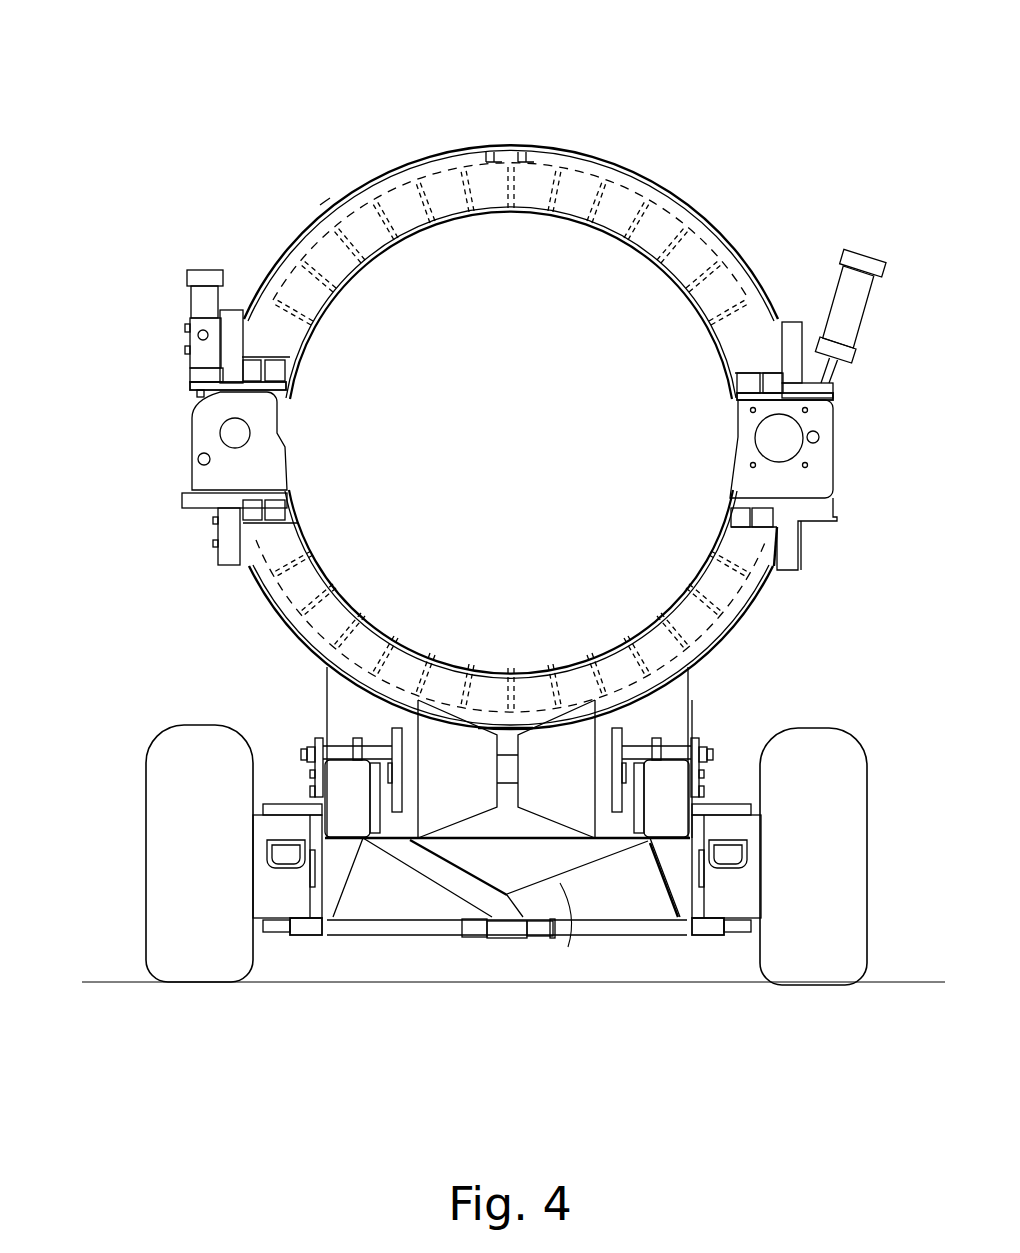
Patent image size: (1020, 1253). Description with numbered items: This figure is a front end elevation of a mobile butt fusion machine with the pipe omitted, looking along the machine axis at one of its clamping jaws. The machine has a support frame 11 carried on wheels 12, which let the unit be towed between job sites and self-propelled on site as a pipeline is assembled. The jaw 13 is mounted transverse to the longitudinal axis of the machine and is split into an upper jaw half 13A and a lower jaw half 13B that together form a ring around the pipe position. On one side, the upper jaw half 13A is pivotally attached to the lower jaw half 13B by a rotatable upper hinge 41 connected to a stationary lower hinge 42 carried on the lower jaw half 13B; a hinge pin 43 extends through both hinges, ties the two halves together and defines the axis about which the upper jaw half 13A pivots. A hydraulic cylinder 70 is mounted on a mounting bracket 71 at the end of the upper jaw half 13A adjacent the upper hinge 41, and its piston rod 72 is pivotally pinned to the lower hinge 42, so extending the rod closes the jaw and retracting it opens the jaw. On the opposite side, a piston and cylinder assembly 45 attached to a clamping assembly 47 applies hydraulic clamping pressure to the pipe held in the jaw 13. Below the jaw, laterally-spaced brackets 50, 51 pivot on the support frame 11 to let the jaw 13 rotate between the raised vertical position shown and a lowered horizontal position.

The support frame 11 is at (476, 988).
The wheels 12 is at (170, 836).
The jaw 13 is at (318, 208).
The upper jaw half 13A is at (437, 197).
The lower jaw half 13B is at (713, 588).
The upper hinge 41 is at (283, 403).
The lower hinge 42 is at (187, 472).
The hinge pin 43 is at (228, 435).
The piston and cylinder assembly 45 is at (852, 313).
The clamping assembly 47 is at (830, 480).
The bracket 50 is at (308, 782).
The bracket 51 is at (703, 783).
The hydraulic cylinder 70 is at (192, 300).
The mounting bracket 71 is at (200, 388).
The piston rod 72 is at (203, 394).